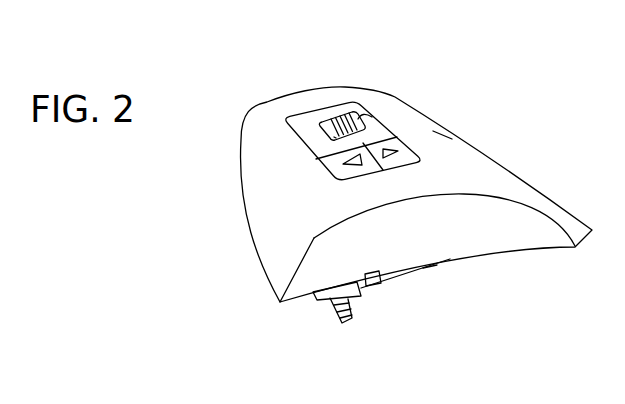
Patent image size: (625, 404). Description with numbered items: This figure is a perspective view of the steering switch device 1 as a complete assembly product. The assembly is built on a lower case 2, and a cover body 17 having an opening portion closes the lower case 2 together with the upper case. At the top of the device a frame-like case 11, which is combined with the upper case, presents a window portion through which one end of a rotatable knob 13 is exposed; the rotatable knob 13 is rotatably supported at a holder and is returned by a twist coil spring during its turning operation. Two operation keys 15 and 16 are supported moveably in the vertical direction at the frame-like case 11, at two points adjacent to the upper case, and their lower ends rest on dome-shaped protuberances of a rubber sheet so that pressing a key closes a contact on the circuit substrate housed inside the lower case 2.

The steering switch device 1 is at (395, 98).
The lower case 2 is at (368, 297).
The frame-like case 11 is at (308, 118).
The rotatable knob 13 is at (318, 122).
The operation key 15 is at (398, 145).
The operation key 16 is at (332, 158).
The cover body 17 is at (513, 185).